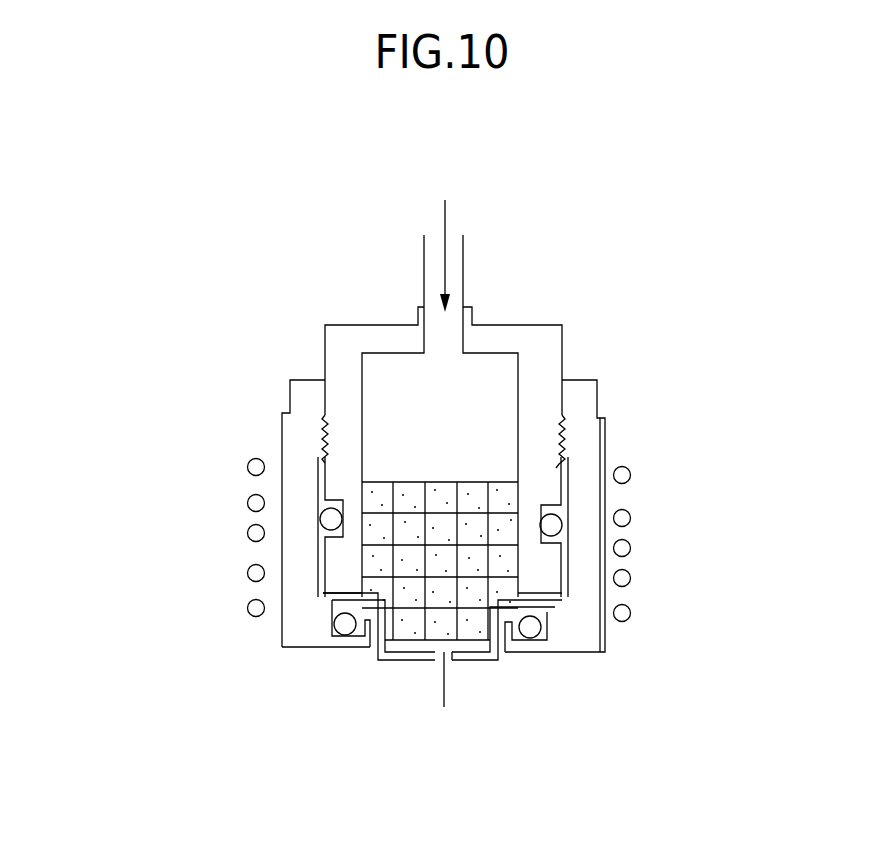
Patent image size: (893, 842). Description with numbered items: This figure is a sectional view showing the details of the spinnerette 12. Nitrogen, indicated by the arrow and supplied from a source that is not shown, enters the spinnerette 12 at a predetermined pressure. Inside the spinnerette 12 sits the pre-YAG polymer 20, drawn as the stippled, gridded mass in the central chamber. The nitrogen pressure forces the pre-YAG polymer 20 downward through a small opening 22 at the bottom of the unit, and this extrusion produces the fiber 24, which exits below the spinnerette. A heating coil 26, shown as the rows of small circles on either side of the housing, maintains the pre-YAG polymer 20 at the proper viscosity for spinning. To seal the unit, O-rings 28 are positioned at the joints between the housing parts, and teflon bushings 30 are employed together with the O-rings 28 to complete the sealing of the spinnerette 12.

The spinnerette 12 is at (419, 694).
The pre-YAG polymer 20 is at (408, 662).
The small opening 22 is at (452, 663).
The fiber 24 is at (446, 690).
The heating coil 26 is at (247, 608).
The O-rings 28 is at (333, 518).
The teflon bushings 30 is at (323, 594).